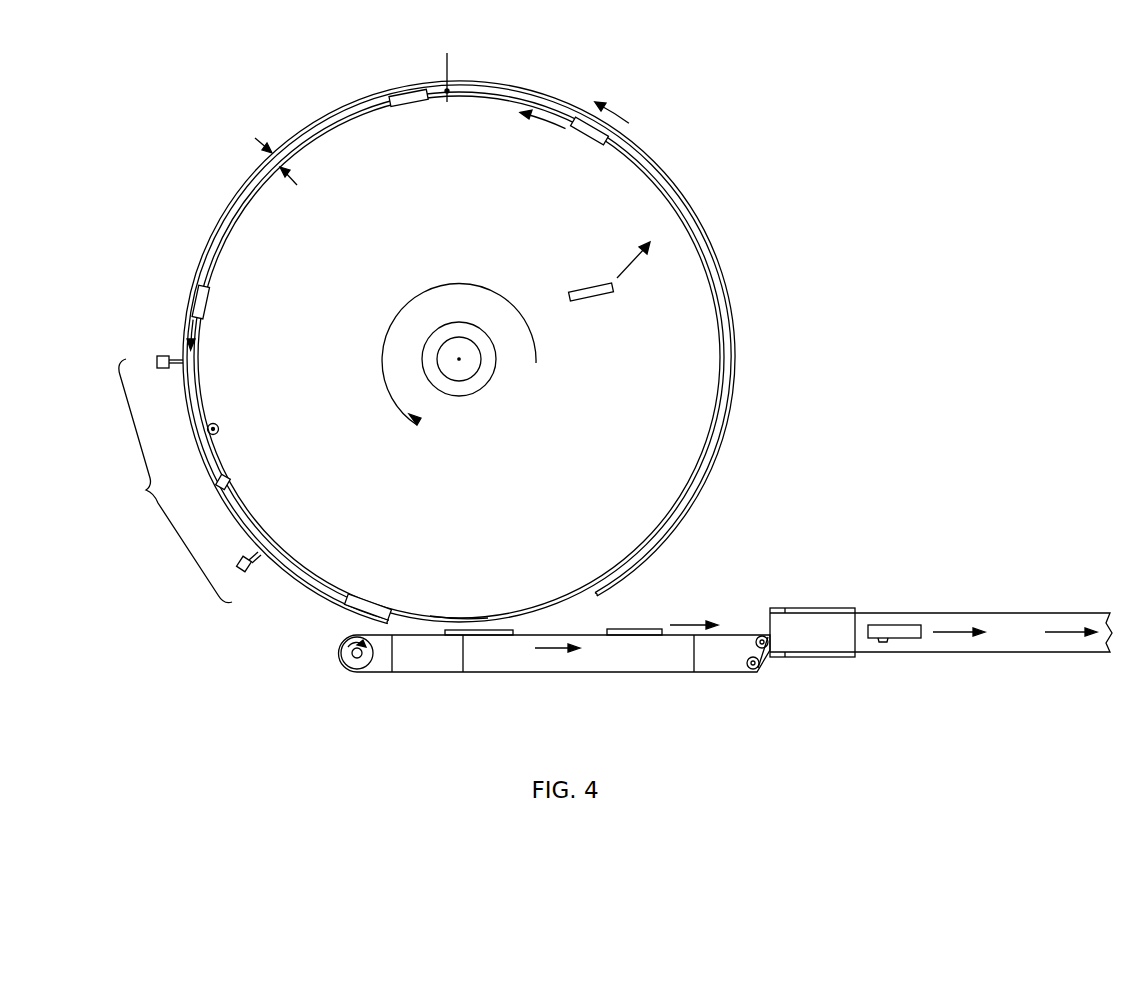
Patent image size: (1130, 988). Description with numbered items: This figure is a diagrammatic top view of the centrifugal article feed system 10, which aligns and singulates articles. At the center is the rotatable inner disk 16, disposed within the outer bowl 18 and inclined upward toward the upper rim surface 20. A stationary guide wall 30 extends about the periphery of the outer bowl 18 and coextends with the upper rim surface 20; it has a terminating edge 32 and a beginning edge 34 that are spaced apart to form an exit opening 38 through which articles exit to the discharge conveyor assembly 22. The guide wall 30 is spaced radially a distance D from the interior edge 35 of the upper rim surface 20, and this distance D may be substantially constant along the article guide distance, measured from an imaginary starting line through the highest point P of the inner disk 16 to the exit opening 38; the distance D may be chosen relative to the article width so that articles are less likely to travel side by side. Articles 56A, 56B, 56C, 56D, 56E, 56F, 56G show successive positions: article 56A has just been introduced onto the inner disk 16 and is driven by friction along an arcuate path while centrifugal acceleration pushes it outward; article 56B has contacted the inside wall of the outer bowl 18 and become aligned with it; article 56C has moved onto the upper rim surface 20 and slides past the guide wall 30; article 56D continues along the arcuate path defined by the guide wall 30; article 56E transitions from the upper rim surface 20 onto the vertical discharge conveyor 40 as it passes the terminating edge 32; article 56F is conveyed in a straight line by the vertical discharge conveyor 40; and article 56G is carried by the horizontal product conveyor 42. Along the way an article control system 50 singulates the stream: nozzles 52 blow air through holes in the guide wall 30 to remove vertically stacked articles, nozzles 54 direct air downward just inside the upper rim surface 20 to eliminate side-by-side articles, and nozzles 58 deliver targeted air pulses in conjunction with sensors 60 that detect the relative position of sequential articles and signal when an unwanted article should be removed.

The centrifugal article feed system 10 is at (606, 254).
The rotatable inner disk 16 is at (722, 358).
The outer bowl 18 is at (734, 319).
The upper rim surface 20 is at (723, 437).
The discharge conveyor assembly 22 is at (787, 702).
The guide wall 30 is at (220, 212).
The terminating edge 32 is at (400, 581).
The beginning edge 34 is at (576, 554).
The interior edge 35 is at (341, 120).
The exit opening 38 is at (487, 577).
The vertical discharge conveyor 40 is at (554, 702).
The horizontal product conveyor 42 is at (941, 682).
The article control system 50 is at (173, 481).
The air nozzles 52 is at (162, 368).
The air nozzles 54 is at (220, 430).
The article 56A is at (592, 300).
The article 56B is at (588, 135).
The article 56C is at (420, 90).
The article 56D is at (204, 303).
The article 56E is at (479, 630).
The article 56F is at (645, 629).
The article 56G is at (898, 624).
The air nozzles 58 is at (238, 562).
The sensors 60 is at (230, 482).
The distance D is at (255, 137).
The highest point P is at (452, 60).